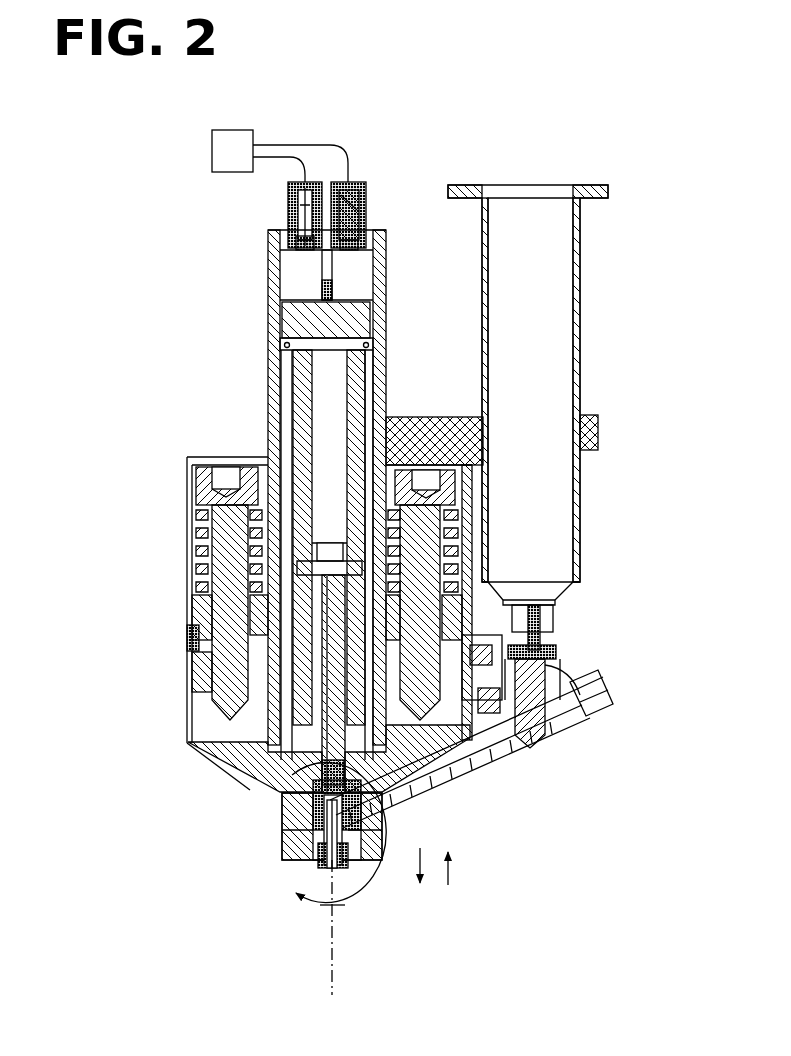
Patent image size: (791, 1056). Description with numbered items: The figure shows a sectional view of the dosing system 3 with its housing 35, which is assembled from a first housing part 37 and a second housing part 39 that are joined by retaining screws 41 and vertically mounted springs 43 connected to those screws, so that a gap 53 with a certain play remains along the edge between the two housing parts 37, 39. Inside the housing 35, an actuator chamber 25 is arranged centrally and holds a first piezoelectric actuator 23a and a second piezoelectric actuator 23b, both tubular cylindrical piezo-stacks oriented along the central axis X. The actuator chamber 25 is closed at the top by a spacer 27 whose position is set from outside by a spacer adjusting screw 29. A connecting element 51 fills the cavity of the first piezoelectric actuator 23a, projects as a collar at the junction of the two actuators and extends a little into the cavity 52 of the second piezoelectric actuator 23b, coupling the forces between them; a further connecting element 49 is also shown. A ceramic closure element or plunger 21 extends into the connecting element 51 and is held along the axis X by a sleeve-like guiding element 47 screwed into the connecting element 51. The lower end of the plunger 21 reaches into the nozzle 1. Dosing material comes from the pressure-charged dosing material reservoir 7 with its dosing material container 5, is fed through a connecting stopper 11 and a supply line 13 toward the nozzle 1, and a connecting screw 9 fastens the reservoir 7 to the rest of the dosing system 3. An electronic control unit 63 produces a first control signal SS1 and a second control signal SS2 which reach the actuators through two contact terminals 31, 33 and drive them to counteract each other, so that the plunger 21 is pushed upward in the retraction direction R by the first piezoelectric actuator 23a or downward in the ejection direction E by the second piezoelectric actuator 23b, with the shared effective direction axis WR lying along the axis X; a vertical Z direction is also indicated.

The nozzle 1 is at (262, 864).
The dosing system 3 is at (416, 180).
The dosing material container 5 is at (580, 288).
The dosing material reservoir 7 is at (558, 258).
The connecting screw 9 is at (598, 703).
The connecting stopper 11 is at (565, 667).
The supply line 13 is at (487, 770).
The closure element—plunger 21 is at (300, 783).
The first piezoelectric actuator 23a is at (402, 885).
The second piezoelectric actuator 23b is at (375, 379).
The actuator chamber 25 is at (385, 408).
The spacer 27 is at (340, 358).
The spacer adjusting screw 29 is at (330, 272).
The contact terminal 31 is at (290, 206).
The contact terminal 33 is at (370, 201).
The housing 35 is at (258, 398).
The first housing part 37 is at (240, 767).
The second housing part 39 is at (275, 343).
The retaining screws 41 is at (205, 707).
The springs 43 is at (188, 550).
The guiding element 47 is at (290, 812).
The connecting element 49 is at (270, 776).
The connecting element 51 is at (295, 680).
The cavity 52 is at (292, 446).
The gap 53 is at (193, 632).
The electronic control unit 63 is at (212, 151).
The first control signal SS1 is at (272, 157).
The second control signal SS2 is at (300, 144).
The Z axis Z is at (339, 837).
The (central) axis X is at (333, 990).
The effective direction axis WR is at (398, 872).
The ejection direction E is at (424, 872).
The retraction direction R is at (451, 873).